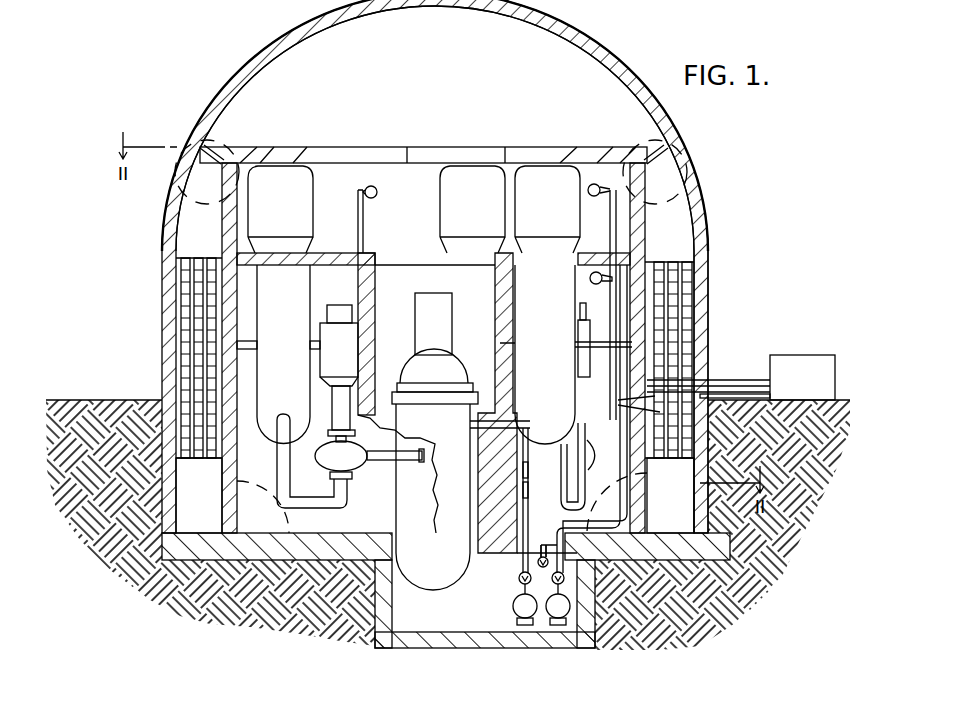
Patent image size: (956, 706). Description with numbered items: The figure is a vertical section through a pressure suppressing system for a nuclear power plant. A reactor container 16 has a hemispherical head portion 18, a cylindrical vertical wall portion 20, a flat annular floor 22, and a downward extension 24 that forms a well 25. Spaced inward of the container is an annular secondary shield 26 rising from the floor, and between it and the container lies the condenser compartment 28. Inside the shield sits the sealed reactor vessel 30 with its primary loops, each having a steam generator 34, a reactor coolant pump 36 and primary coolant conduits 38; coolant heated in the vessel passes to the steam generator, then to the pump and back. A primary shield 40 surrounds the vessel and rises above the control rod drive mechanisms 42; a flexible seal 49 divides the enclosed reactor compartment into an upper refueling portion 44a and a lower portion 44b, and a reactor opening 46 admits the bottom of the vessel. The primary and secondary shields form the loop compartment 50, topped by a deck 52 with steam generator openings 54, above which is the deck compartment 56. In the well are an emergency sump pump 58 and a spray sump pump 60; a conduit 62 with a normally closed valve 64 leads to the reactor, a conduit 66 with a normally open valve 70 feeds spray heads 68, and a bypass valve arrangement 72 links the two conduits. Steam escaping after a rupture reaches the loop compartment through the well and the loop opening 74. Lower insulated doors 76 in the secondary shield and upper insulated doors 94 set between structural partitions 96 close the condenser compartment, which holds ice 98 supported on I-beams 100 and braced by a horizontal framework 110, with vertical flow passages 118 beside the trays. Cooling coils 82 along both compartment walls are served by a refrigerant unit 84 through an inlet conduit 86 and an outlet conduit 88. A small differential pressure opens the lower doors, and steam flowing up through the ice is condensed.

The reactor container 16 is at (233, 88).
The hemispherical head portion 18 is at (612, 72).
The vertical wall portion 20 is at (700, 337).
The floor 22 is at (290, 549).
The downward extension 24 is at (394, 607).
The well 25 is at (400, 627).
The secondary shield 26 is at (230, 238).
The condenser compartment 28 is at (684, 206).
The reactor vessel 30 is at (448, 499).
The steam generator 34 is at (296, 300).
The reactor coolant pump 36 is at (332, 461).
The primary coolant conduits 38 is at (400, 461).
The primary shield 40 is at (529, 492).
The control rod drive mechanisms 42 is at (445, 313).
The upper or refueling portion of reactor compartment 44a is at (393, 280).
The lower portion of reactor compartment 44b is at (472, 458).
The reactor opening 46 is at (470, 568).
The flexible seal 49 is at (471, 378).
The loop compartment 50 is at (328, 277).
The deck 52 is at (345, 255).
The steam generator openings 54 is at (578, 256).
The deck compartment 56 is at (535, 54).
The emergency sump pump 58 is at (513, 612).
The spray sump pump 60 is at (598, 613).
The conduit 62 is at (529, 474).
The valve 64 is at (518, 585).
The conduit 66 is at (364, 215).
The spray heads 68 is at (378, 190).
The valve 70 is at (584, 583).
The bypass valve arrangement 72 is at (536, 565).
The loop opening 74 is at (544, 542).
The insulated doors 76 is at (238, 521).
The cooling coils 82 is at (215, 316).
The refrigerant unit 84 is at (802, 355).
The inlet conduit 86 is at (747, 390).
The outlet conduit 88 is at (720, 378).
The upper insulated doors 94 is at (276, 152).
The structural partitions 96 is at (362, 151).
The solid material (ice) 98 is at (660, 276).
The I-beams 100 is at (690, 484).
The horizontal structural framework 110 is at (684, 257).
The vertical flow passages 118 is at (619, 402).